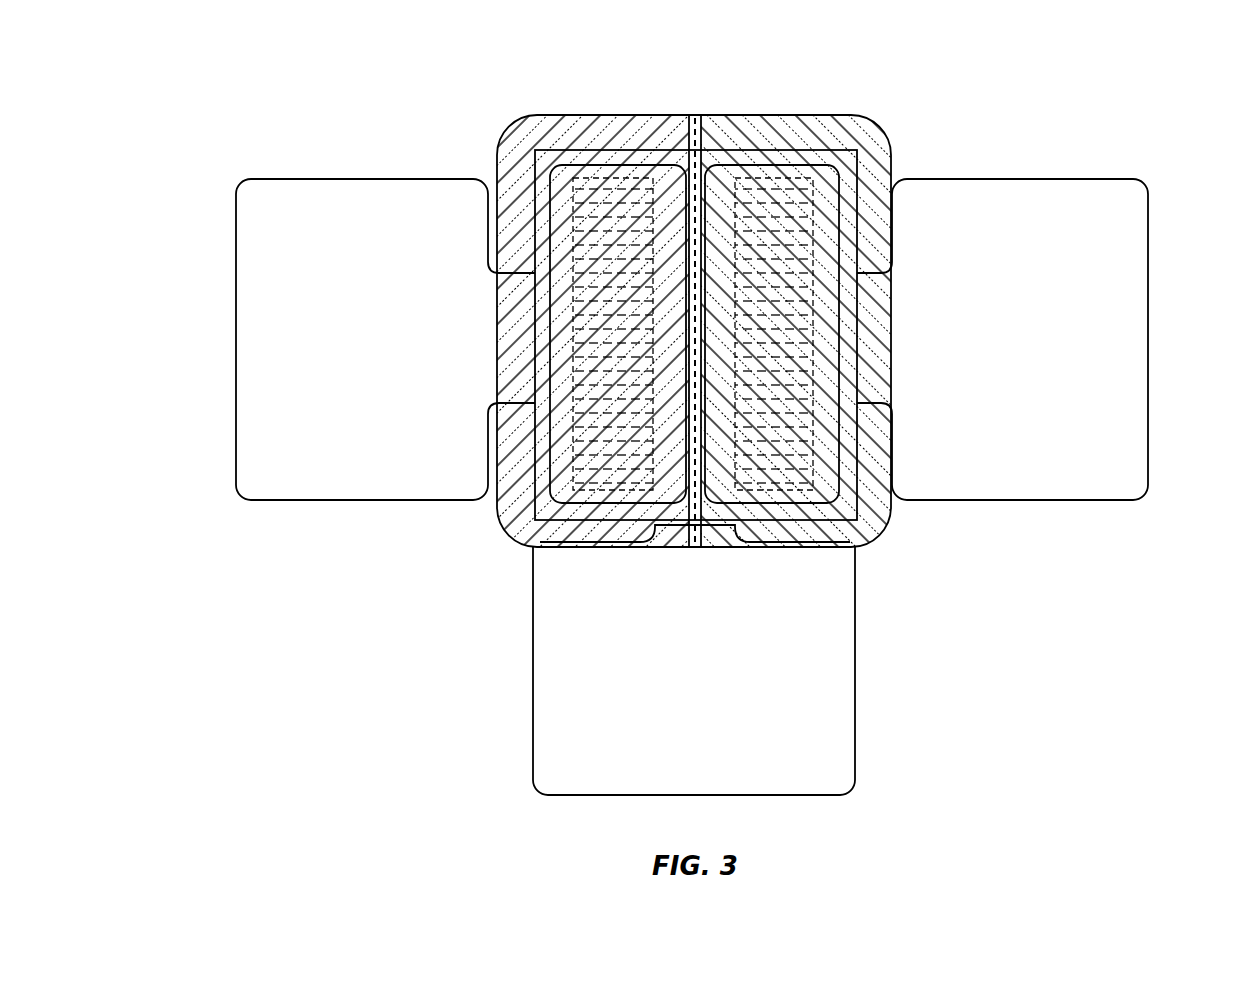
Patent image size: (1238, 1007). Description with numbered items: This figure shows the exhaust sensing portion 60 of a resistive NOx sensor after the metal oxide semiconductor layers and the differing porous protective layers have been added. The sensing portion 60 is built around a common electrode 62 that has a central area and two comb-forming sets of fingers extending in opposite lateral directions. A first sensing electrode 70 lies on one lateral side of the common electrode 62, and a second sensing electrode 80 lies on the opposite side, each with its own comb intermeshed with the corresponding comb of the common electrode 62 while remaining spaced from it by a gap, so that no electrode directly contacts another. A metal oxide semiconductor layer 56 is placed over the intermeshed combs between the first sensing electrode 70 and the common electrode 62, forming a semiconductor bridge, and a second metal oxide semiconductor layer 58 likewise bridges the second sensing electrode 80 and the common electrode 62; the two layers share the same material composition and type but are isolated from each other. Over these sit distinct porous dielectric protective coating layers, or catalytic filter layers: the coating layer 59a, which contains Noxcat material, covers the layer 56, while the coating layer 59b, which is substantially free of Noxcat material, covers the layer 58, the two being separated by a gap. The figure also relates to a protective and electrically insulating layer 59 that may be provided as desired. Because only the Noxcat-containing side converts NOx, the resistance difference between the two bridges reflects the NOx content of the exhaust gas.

The exhaust/NOx sensing portion 60 is at (306, 75).
The protective and/or electrically insulating layer 59 is at (525, 135).
The porous dielectric protective coating layer 59a is at (595, 130).
The porous dielectric protective coating layer 59b is at (805, 135).
The metal oxide semiconductor layer 56 is at (665, 187).
The metal oxide semiconductor layer 58 is at (718, 195).
The first sensing electrode 70 is at (235, 320).
The second sensing electrode 80 is at (1148, 283).
The common electrode 62 is at (530, 717).